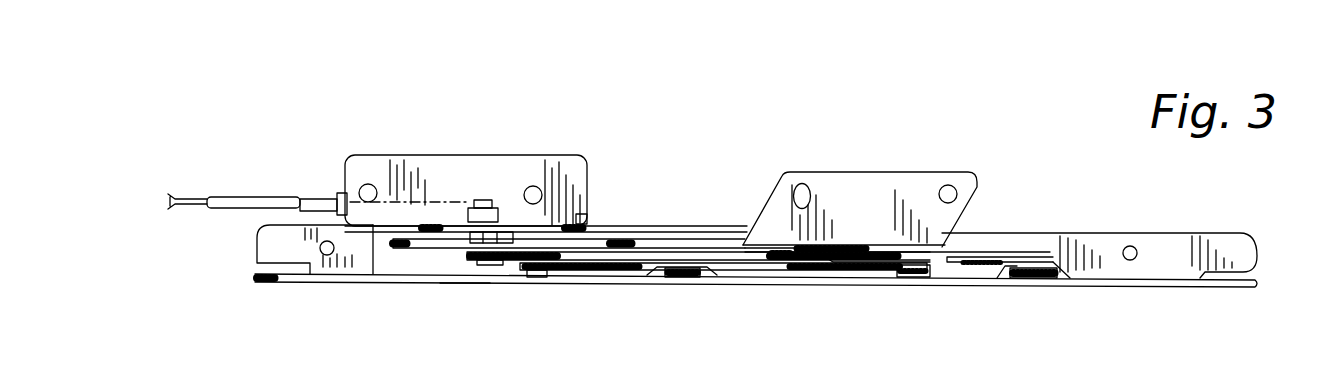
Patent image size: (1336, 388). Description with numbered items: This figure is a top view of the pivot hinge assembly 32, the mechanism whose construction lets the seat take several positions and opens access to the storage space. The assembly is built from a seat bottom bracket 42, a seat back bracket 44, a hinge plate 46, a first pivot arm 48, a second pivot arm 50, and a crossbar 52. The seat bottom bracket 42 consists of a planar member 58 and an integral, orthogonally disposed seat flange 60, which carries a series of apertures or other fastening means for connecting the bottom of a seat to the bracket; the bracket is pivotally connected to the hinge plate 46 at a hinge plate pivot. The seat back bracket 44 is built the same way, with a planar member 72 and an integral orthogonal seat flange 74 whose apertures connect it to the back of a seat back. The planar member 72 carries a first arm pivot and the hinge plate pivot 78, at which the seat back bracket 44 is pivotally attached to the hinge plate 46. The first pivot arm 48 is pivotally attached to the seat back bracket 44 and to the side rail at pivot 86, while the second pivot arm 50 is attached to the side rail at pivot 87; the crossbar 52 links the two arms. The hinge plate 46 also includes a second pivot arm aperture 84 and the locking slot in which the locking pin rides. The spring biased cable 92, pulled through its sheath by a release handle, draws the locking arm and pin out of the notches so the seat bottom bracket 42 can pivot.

The pivot hinge assembly 32 is at (713, 125).
The seat bottom bracket 42 is at (533, 159).
The seat back bracket 44 is at (928, 154).
The hinge plate 46 is at (430, 248).
The first pivot arm 48 is at (950, 257).
The second pivot arm 50 is at (583, 256).
The crossbar 52 is at (802, 255).
The planar member 58 is at (375, 226).
The seat flange 60 is at (452, 170).
The planar member 72 is at (945, 250).
The seat flange 74 is at (836, 190).
The hinge plate pivot 78 is at (645, 248).
The second pivot arm aperture 84 is at (465, 335).
The pivot 86 is at (1046, 260).
The pivot 87 is at (683, 268).
The spring biased cable 92 is at (192, 210).